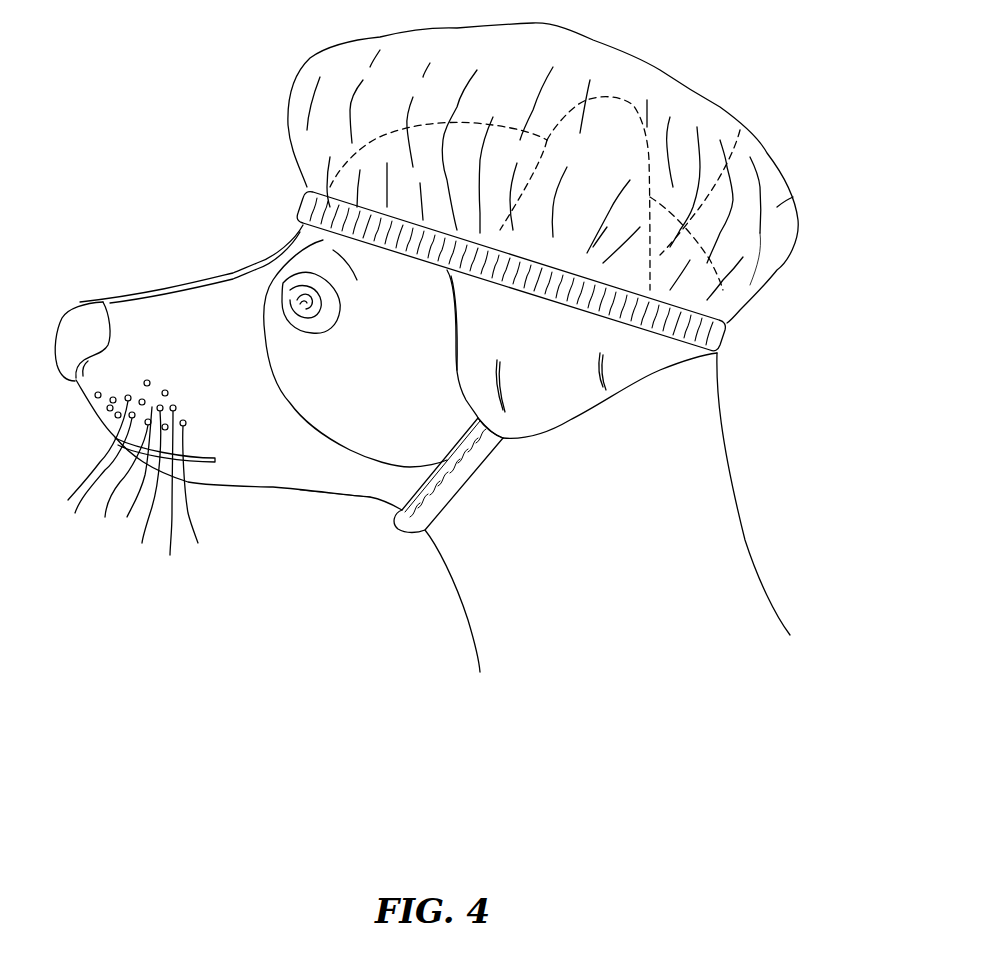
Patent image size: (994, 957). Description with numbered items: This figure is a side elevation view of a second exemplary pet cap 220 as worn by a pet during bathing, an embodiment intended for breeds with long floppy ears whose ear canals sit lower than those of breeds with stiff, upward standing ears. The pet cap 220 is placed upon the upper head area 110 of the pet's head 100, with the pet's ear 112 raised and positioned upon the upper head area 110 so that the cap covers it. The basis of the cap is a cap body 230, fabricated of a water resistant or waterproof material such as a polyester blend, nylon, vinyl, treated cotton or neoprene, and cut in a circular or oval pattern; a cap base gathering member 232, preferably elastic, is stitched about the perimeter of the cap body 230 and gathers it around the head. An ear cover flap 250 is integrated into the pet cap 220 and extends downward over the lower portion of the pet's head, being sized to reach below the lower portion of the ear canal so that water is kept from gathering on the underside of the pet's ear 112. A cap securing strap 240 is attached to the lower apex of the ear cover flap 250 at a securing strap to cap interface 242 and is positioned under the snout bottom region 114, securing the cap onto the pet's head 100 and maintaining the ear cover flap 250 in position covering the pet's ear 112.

The pet's head 100 is at (157, 222).
The upper head area 110 is at (740, 130).
The pet's ear 112 is at (645, 105).
The snout bottom region 114 is at (350, 505).
The pet cap 220 is at (267, 80).
The cap body 230 is at (777, 207).
The cap base gathering member 232 is at (303, 213).
The cap securing strap 240 is at (467, 490).
The securing strap to cap interface 242 is at (503, 438).
The ear cover flap 250 is at (573, 397).